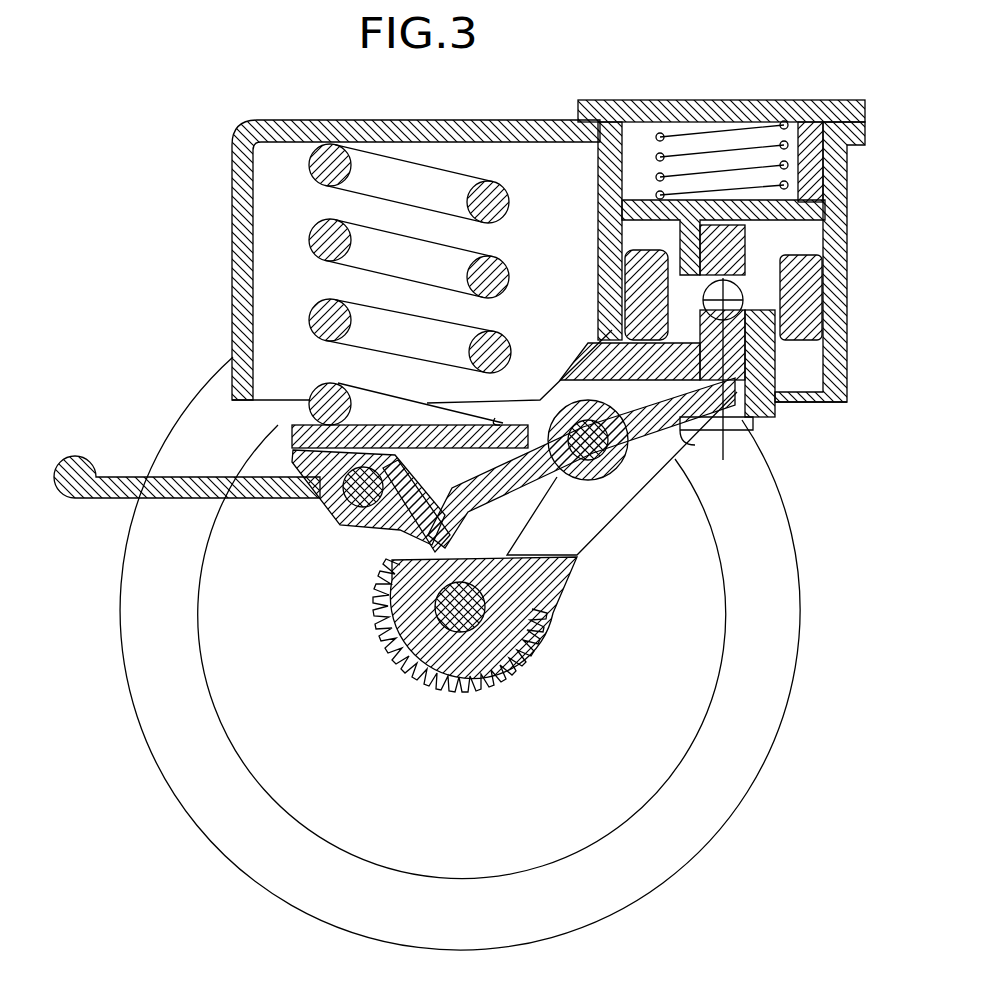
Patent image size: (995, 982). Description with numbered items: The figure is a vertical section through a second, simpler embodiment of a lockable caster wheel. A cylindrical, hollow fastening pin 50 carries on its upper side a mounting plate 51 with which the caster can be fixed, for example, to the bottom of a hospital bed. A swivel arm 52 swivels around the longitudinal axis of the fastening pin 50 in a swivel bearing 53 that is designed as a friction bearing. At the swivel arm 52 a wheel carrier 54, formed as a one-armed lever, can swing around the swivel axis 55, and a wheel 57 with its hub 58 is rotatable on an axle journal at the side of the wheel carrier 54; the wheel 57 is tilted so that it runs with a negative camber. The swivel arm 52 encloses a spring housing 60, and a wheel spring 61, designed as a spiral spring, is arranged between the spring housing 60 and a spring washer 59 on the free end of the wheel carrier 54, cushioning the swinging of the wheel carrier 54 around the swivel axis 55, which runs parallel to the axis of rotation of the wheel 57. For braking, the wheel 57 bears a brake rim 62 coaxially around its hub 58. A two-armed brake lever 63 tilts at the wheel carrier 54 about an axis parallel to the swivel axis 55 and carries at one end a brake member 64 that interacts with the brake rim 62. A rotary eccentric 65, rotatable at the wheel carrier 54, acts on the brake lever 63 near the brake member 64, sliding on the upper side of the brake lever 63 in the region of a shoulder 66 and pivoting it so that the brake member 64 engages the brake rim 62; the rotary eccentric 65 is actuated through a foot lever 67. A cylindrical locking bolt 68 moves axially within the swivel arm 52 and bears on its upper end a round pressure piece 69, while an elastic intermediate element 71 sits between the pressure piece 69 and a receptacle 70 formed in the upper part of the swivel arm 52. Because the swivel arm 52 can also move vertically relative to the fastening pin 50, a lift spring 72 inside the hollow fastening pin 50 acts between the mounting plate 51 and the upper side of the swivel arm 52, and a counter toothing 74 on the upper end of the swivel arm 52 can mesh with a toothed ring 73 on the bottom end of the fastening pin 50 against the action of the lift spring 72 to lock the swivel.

The fastening pin 50 is at (818, 160).
The mounting plate 51 is at (746, 100).
The swivel arm 52 is at (835, 400).
The swivel bearing 53 is at (615, 190).
The wheel carrier 54 is at (587, 510).
The swivel axis 55 is at (792, 310).
The wheel 57 is at (775, 615).
The hub 58 is at (527, 657).
The spring washer 59 is at (290, 432).
The spring housing 60 is at (240, 230).
The wheel spring 61 is at (328, 155).
The brake rim 62 is at (392, 570).
The brake lever 63 is at (683, 436).
The brake member 64 is at (560, 478).
The rotary eccentric 65 is at (330, 505).
The shoulder 66 is at (475, 505).
The foot lever 67 is at (78, 462).
The locking bolt 68 is at (742, 356).
The pressure piece 69 is at (772, 330).
The receptacle 70 is at (748, 245).
The elastic intermediate element 71 is at (745, 288).
The lift spring 72 is at (686, 132).
The toothed ring 73 is at (815, 205).
The counter toothing 74 is at (800, 230).